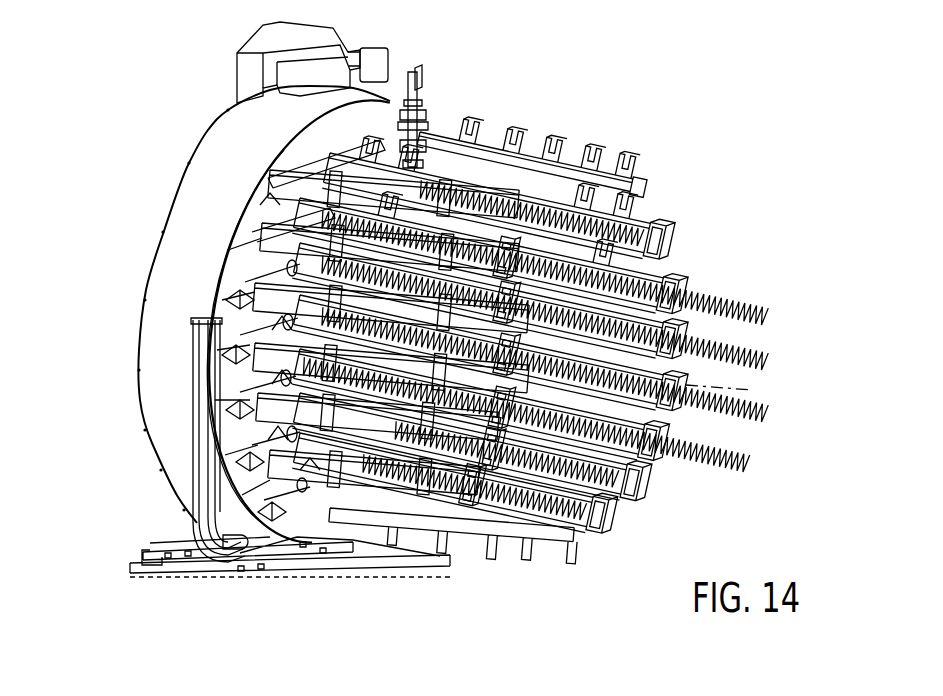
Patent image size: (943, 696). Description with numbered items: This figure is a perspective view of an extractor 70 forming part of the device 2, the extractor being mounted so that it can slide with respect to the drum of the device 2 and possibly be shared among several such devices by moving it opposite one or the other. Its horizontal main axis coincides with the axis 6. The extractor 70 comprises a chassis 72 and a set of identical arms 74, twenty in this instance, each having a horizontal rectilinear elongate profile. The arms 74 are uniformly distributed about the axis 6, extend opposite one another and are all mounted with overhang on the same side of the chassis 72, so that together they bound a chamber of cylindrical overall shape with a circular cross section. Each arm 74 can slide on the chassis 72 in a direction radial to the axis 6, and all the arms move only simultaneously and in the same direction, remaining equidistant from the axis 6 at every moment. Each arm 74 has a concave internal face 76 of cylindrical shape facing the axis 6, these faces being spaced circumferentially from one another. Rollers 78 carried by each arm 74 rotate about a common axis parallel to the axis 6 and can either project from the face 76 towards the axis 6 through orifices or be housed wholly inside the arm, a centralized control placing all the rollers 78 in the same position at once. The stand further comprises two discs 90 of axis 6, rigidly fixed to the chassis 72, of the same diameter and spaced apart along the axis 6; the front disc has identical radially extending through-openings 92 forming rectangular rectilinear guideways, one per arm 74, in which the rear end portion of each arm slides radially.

The device 2 is at (645, 142).
The axis 6 is at (724, 380).
The extractor 70 is at (692, 172).
The chassis 72 is at (168, 546).
The arms 74 is at (672, 243).
The concave internal face 76 is at (661, 307).
The rollers 78 is at (612, 380).
The discs 90 is at (393, 100).
The through-openings 92 is at (262, 168).